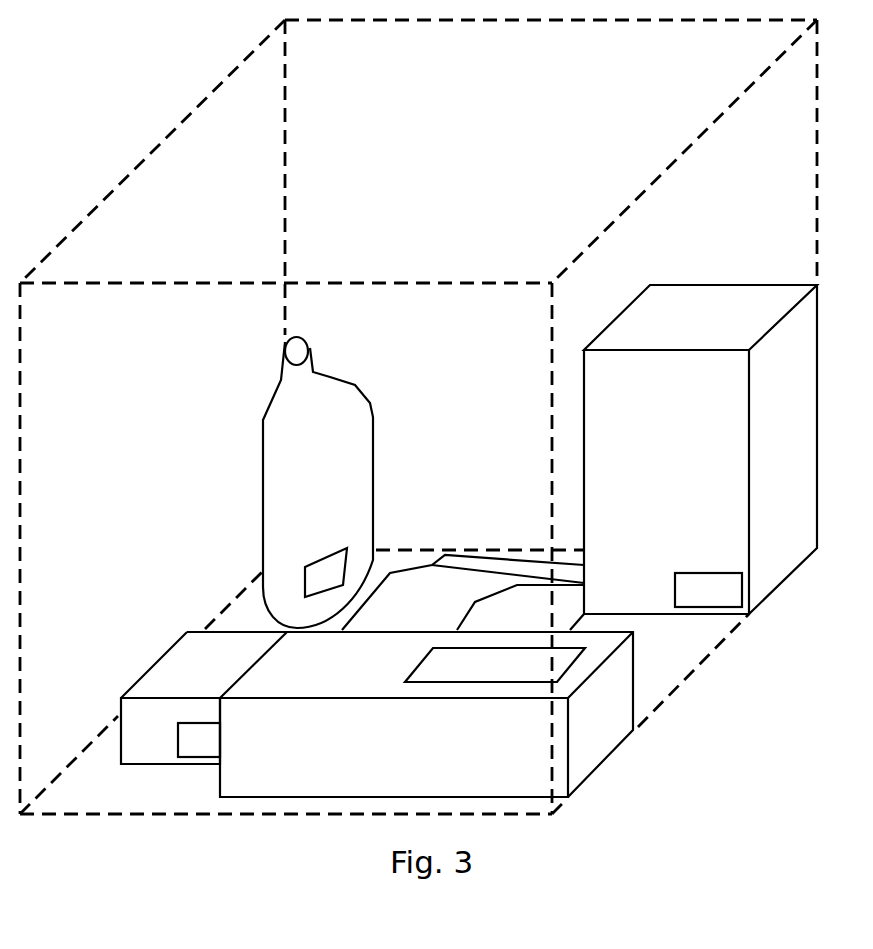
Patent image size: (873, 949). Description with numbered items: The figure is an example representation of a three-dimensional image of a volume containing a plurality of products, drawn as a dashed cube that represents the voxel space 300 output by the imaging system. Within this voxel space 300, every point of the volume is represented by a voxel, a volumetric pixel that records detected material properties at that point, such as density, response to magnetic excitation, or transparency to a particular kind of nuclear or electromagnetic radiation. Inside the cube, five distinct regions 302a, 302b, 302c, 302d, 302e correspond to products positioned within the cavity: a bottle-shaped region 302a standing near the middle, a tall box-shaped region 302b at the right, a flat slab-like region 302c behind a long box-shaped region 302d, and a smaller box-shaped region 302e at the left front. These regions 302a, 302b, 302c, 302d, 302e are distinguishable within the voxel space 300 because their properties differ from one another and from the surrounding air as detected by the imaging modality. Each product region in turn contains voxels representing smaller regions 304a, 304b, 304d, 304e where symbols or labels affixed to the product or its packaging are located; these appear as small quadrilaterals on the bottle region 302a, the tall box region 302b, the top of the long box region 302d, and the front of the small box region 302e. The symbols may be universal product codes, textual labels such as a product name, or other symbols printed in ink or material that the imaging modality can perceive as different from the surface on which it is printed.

The voxel space 300 is at (152, 156).
The region 302a is at (352, 466).
The region 302b is at (701, 466).
The region 302c is at (436, 614).
The region 302d is at (387, 754).
The region 302e is at (178, 698).
The region 304a is at (318, 580).
The region 304b is at (733, 593).
The region 304d is at (436, 674).
The region 304e is at (203, 736).